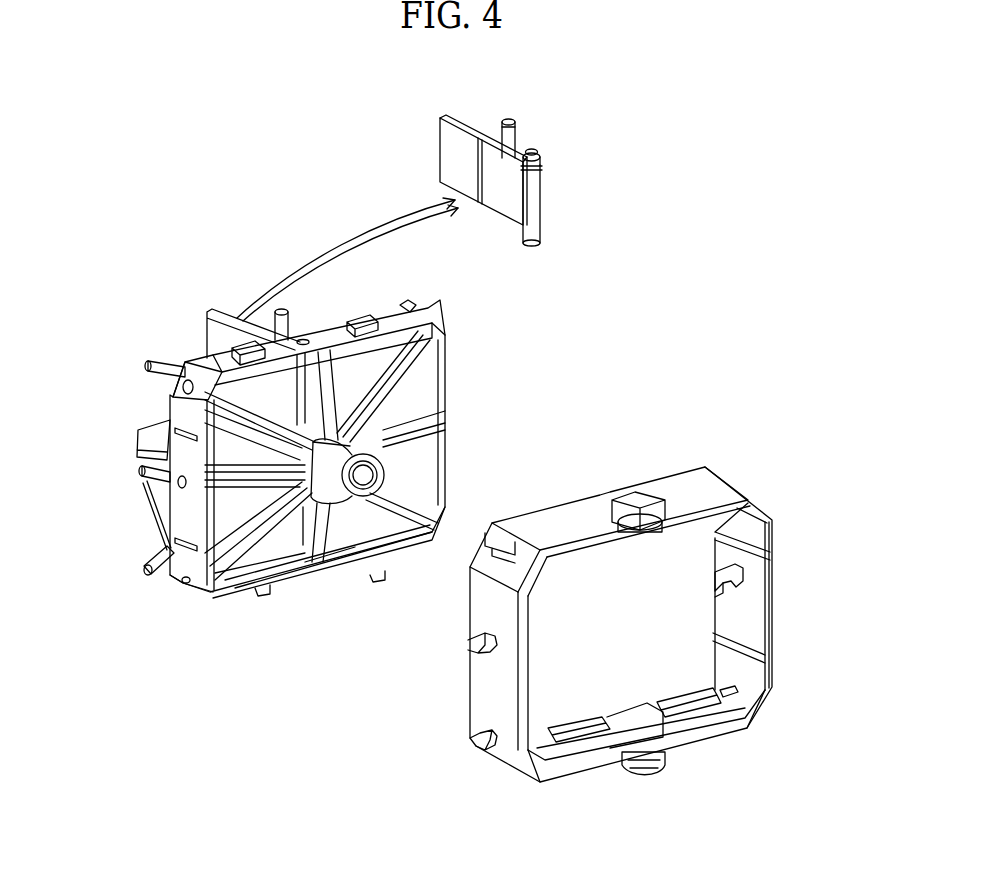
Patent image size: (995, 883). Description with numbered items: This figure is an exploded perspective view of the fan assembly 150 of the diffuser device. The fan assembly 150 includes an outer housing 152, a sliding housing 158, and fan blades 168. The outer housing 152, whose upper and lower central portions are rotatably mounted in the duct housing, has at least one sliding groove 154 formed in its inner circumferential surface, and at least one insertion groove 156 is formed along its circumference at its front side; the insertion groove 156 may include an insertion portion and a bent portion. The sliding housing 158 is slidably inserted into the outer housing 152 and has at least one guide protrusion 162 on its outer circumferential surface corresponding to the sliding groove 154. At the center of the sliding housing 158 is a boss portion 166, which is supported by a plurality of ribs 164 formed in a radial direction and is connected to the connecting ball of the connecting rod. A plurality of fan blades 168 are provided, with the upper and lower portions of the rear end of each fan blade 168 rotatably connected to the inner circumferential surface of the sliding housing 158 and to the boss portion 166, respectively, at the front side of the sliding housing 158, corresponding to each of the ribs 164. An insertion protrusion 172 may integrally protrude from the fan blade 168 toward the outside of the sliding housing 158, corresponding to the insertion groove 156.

The fan assembly 150 is at (292, 140).
The outer housing 152 is at (745, 605).
The sliding groove 154 is at (573, 740).
The insertion groove 156 is at (497, 657).
The sliding housing 158 is at (403, 322).
The guide protrusion 162 is at (362, 320).
The rib 164 is at (420, 438).
The boss portion 166 is at (315, 562).
The fan blade 168 is at (505, 197).
The insertion protrusion 172 is at (513, 135).